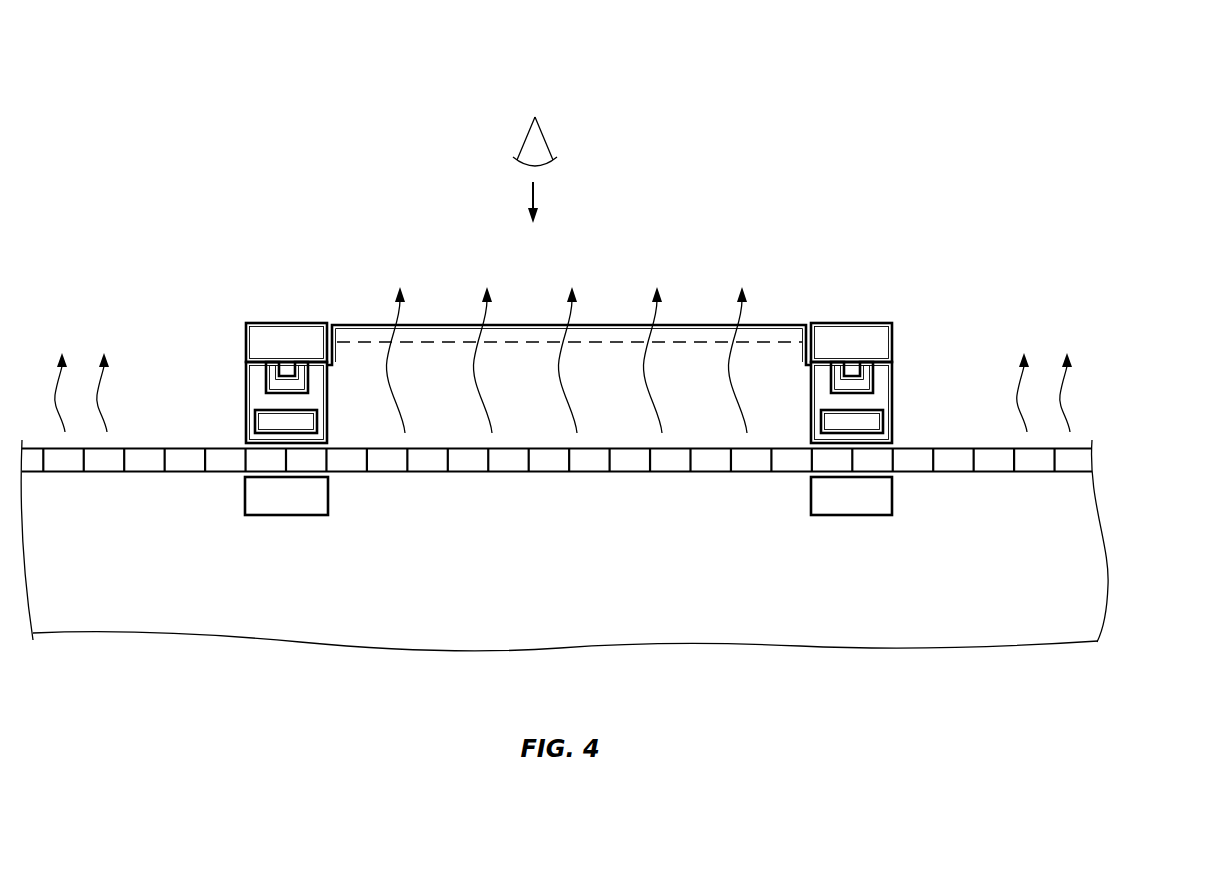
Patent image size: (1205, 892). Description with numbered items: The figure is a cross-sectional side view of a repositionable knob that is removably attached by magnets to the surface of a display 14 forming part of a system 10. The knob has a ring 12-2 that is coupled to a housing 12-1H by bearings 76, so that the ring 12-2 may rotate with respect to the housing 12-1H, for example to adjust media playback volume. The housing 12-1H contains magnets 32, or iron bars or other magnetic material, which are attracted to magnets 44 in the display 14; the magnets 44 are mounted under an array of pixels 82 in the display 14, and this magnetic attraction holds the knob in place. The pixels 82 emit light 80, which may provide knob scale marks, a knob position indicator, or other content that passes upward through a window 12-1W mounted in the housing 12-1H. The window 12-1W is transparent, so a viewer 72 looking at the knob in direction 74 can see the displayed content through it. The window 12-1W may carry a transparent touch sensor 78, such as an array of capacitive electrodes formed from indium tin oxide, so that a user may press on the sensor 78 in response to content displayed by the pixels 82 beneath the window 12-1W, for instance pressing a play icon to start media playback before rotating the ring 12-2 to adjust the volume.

The system 10 is at (905, 215).
The viewer 72 is at (538, 133).
The direction 74 is at (535, 192).
The ring 12-2 is at (290, 333).
The housing 12-1H is at (255, 393).
The window 12-1W is at (362, 314).
The touch sensor 78 is at (752, 350).
The bearings 76 is at (254, 380).
The magnets 32 is at (255, 418).
The magnets 44 is at (286, 503).
The display 14 is at (1133, 443).
The pixels 82 is at (67, 462).
The light 80 is at (402, 310).